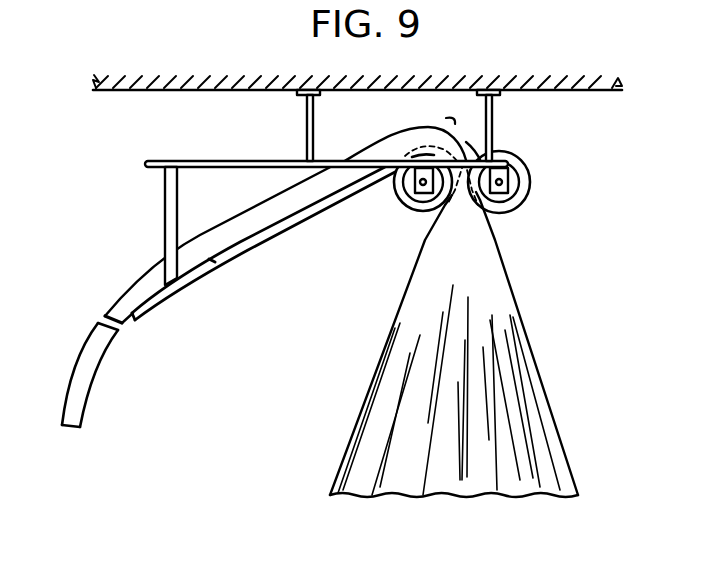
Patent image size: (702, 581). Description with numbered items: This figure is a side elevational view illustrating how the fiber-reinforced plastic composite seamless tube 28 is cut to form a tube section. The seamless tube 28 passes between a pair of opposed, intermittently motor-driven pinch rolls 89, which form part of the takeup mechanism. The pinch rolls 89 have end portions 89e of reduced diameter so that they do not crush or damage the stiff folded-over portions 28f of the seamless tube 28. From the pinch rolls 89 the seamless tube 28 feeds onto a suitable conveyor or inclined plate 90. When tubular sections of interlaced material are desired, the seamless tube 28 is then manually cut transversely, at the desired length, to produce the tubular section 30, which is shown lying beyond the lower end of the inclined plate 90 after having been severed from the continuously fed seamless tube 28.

The seamless tube 28 is at (121, 284).
The folded-over portions 28f is at (452, 120).
The tubular section 30 is at (95, 383).
The pinch rolls 89 is at (420, 214).
The end portions 89e is at (393, 186).
The inclined plate 90 is at (245, 249).